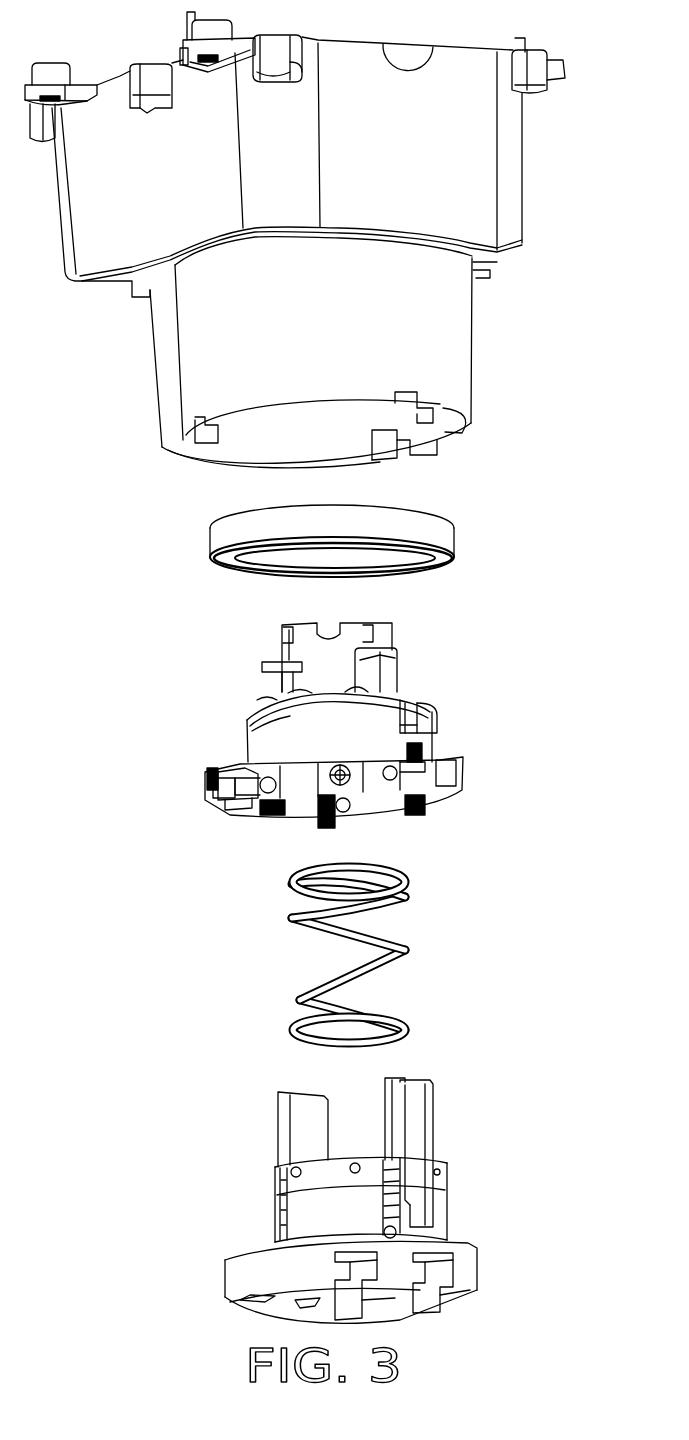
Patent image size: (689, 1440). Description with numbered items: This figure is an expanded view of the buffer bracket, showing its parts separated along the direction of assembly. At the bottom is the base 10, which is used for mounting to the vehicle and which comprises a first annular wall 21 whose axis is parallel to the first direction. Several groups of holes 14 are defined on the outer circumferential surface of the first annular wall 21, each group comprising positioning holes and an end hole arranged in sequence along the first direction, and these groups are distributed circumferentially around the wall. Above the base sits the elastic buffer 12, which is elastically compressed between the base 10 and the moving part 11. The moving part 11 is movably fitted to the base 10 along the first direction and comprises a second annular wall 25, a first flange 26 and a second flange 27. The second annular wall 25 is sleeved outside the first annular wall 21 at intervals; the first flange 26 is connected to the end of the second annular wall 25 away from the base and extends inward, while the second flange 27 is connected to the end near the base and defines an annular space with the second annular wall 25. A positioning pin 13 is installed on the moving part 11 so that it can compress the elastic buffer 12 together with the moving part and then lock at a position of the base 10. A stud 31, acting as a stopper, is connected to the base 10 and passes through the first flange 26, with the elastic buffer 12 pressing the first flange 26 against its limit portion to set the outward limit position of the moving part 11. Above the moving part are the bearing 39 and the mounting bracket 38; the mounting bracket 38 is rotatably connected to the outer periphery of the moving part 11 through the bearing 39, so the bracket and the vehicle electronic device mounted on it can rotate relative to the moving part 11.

The mounting bracket 38 is at (500, 353).
The bearing 39 is at (470, 537).
The moving part 11 is at (330, 725).
The second annular wall 25 is at (257, 730).
The stud 31 is at (278, 683).
The first flange 26 is at (352, 684).
The positioning pin 13 is at (427, 759).
The second flange 27 is at (250, 772).
The elastic buffer 12 is at (405, 937).
The base 10 is at (381, 1200).
The first annular wall 21 is at (321, 1162).
The group of holes 14 is at (383, 1192).